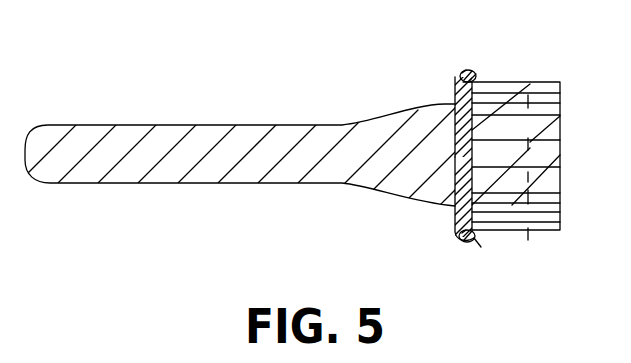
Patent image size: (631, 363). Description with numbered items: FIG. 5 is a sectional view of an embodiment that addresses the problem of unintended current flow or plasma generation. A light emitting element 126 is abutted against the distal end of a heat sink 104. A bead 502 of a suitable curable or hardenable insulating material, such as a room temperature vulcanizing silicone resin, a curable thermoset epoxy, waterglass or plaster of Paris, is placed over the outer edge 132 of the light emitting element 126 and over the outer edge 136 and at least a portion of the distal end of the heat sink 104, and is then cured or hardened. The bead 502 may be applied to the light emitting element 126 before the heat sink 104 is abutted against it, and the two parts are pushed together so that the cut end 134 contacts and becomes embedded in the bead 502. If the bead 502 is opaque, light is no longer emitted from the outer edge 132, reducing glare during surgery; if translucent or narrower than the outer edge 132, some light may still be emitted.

The heat sink 104 is at (545, 80).
The light emitting element 126 is at (455, 213).
The outer edge 132 is at (460, 80).
The cut end 134 is at (455, 232).
The outer edge 136 is at (467, 68).
The bead 502 is at (478, 70).